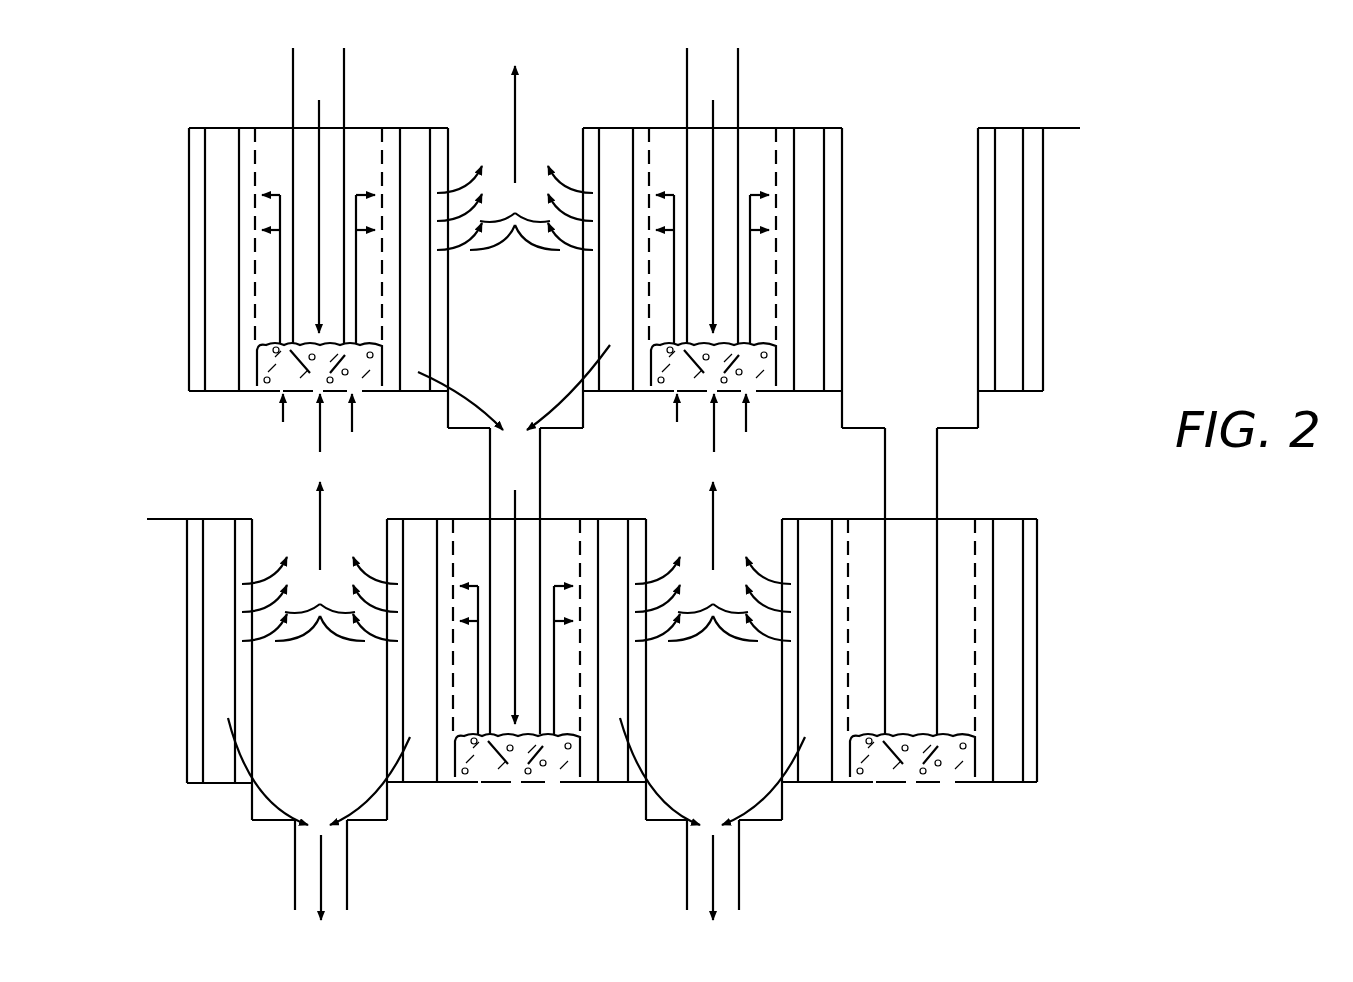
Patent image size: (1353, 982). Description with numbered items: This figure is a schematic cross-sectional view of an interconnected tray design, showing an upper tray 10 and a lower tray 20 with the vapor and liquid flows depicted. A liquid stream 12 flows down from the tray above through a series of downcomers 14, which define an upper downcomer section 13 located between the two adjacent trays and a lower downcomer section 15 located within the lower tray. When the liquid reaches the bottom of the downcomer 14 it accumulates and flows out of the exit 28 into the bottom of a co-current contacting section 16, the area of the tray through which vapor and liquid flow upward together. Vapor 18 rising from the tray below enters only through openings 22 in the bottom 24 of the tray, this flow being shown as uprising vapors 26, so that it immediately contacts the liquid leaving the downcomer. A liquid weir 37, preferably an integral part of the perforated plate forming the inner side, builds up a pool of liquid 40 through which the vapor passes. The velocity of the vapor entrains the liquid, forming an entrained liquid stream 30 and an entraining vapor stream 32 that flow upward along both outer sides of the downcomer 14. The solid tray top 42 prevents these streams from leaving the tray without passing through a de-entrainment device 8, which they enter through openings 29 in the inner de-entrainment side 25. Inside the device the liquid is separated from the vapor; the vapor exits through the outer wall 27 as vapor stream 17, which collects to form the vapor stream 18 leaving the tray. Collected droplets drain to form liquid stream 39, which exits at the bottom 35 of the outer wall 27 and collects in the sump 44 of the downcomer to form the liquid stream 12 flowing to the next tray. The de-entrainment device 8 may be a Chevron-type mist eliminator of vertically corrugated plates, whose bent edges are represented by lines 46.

The de-entrainment device 8 is at (615, 455).
The upper tray 10 is at (797, 100).
The liquid stream 12 is at (319, 110).
The upper downcomer section 13 is at (904, 457).
The downcomer 14 is at (293, 118).
The lower downcomer section 15 is at (904, 632).
The co-current contacting section 16 is at (615, 431).
The vapor stream 17 is at (516, 403).
The vapor 18 is at (515, 105).
The lower tray 20 is at (896, 855).
The openings 22 is at (318, 391).
The bottom 24 is at (225, 392).
The inner de-entrainment side 25 is at (382, 240).
The uprising vapors 26 is at (283, 410).
The outer wall 27 is at (448, 320).
The exit 28 is at (378, 366).
The openings 29 is at (382, 298).
The entrained liquid stream 30 is at (280, 248).
The entraining vapor stream 32 is at (280, 292).
The bottom 35 is at (448, 375).
The liquid weir 37 is at (258, 382).
The liquid stream 39 is at (550, 412).
The pool of liquid 40 is at (790, 362).
The tray top 42 is at (268, 128).
The sump 44 is at (252, 805).
The lines 46 is at (630, 162).